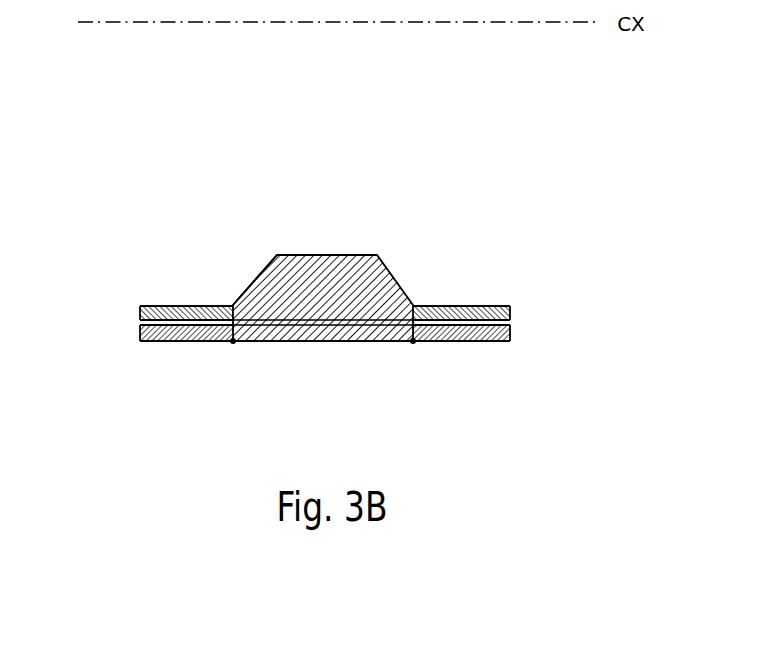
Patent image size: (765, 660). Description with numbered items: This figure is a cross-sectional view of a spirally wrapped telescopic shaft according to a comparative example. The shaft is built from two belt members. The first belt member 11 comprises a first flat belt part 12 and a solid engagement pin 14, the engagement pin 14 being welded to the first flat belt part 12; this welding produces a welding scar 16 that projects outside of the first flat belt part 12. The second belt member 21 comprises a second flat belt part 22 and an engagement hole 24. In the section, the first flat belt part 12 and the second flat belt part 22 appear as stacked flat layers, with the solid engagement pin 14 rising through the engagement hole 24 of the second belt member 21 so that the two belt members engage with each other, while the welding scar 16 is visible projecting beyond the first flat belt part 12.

The first belt member 11 is at (490, 389).
The first flat belt part 12 is at (163, 342).
The engagement pin 14 is at (312, 342).
The welding scar 16 is at (233, 343).
The second belt member 21 is at (490, 253).
The second flat belt part 22 is at (193, 306).
The engagement hole 24 is at (244, 297).